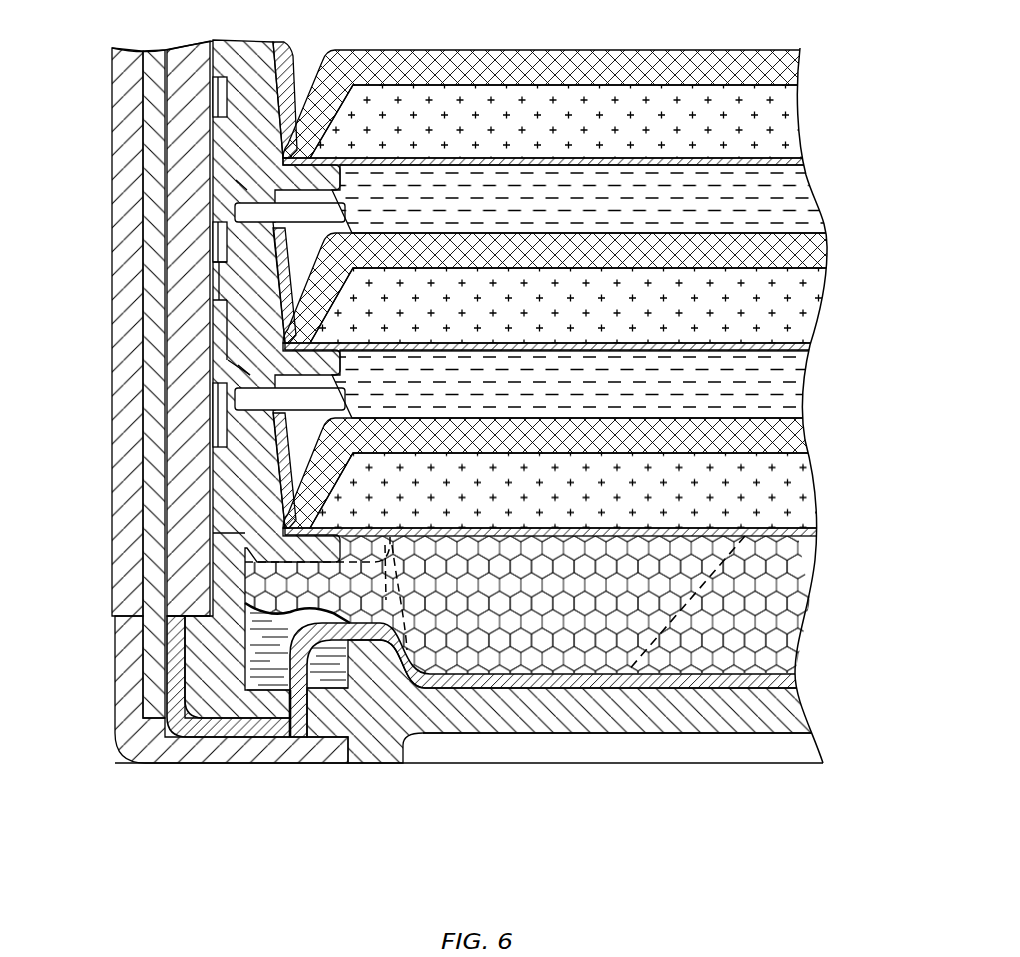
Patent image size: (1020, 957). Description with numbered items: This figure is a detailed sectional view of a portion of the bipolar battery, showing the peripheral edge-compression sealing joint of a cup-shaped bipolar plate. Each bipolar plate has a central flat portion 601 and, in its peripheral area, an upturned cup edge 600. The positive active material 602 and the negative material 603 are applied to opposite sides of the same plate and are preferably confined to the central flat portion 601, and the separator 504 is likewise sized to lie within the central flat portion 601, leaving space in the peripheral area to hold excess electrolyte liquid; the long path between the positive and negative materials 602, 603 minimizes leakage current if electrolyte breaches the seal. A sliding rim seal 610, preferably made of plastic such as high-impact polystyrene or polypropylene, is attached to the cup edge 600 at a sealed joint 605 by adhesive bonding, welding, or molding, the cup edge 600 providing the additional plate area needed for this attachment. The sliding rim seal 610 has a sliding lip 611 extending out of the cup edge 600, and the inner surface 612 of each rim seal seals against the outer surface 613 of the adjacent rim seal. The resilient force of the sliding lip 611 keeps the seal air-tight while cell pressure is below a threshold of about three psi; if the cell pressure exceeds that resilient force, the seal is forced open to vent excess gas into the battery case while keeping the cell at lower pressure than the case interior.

The separator 504 is at (818, 250).
The cup edge 600 is at (280, 442).
The central flat portion 601 is at (812, 350).
The positive active material 602 is at (802, 483).
The negative material 603 is at (792, 390).
The sealed joint 605 is at (223, 253).
The sliding rim seal 610 is at (255, 482).
The sliding lip 611 is at (243, 332).
The inner surface 612 is at (232, 364).
The outer surface 613 is at (227, 282).